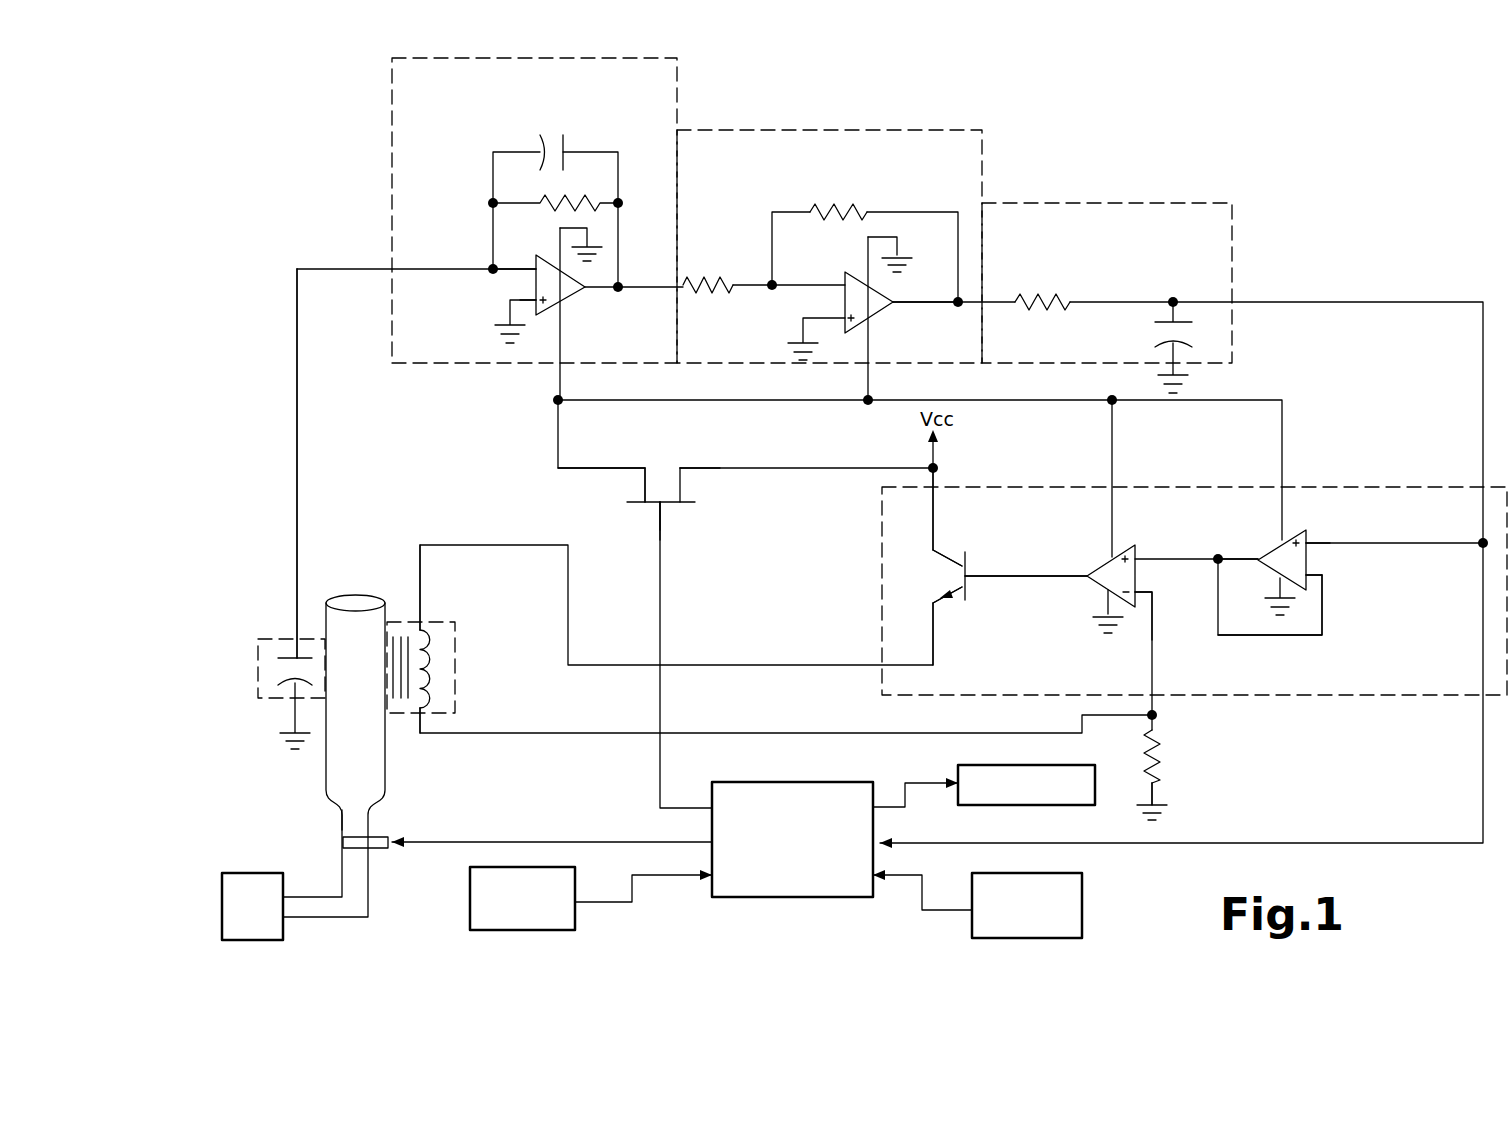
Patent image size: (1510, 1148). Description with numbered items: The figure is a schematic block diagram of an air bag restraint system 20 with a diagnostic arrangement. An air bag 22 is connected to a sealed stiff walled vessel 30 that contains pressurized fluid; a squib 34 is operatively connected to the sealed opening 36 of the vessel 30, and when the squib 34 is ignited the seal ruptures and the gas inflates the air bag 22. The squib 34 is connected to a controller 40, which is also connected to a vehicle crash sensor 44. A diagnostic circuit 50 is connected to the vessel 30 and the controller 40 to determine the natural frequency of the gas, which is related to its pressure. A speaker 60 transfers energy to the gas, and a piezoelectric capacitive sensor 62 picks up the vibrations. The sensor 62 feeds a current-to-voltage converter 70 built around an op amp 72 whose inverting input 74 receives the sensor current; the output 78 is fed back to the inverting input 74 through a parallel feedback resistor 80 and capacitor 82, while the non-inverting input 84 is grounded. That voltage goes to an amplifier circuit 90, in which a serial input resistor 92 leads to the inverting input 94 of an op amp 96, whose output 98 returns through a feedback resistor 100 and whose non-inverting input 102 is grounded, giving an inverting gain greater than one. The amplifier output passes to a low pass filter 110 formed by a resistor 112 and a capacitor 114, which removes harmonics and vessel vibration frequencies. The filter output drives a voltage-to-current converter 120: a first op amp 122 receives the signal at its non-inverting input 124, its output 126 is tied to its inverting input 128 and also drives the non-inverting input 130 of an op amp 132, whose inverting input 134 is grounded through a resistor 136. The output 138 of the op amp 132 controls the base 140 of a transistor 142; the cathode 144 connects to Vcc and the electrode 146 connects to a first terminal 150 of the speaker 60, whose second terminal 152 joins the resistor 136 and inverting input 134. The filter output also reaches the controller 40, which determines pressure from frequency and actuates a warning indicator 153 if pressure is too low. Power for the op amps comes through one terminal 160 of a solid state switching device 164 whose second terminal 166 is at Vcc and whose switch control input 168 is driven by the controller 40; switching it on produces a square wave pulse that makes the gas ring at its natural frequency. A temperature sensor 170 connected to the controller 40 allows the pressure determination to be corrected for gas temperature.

The air bag restraint system 20 is at (252, 240).
The air bag 22 is at (245, 873).
The sealed stiff walled vessel 30 is at (357, 747).
The squib 34 is at (376, 843).
The sealed opening 36 is at (346, 819).
The controller 40 is at (803, 790).
The vehicle crash sensor 44 is at (985, 933).
The diagnostic circuit 50 is at (272, 505).
The speaker 60 is at (440, 659).
The piezoelectric capacitive sensor 62 is at (278, 641).
The current-to-voltage converter 70 is at (392, 155).
The operational amplifier 72 is at (560, 283).
The inverting input 74 is at (540, 270).
The output 78 is at (612, 287).
The feedback resistor 80 is at (525, 200).
The feedback capacitor 82 is at (570, 150).
The non-inverting input 84 is at (536, 300).
The amplifier circuit 90 is at (885, 130).
The serial input resistor 92 is at (728, 290).
The inverting input 94 is at (848, 290).
The op amp 96 is at (880, 305).
The output 98 is at (885, 300).
The feedback resistor 100 is at (815, 210).
The non-inverting input 102 is at (852, 318).
The low pass filter 110 is at (1120, 203).
The resistor 112 is at (1062, 305).
The capacitor 114 is at (1165, 322).
The voltage-to-current converter 120 is at (1075, 487).
The first op amp 122 is at (1262, 558).
The non-inverting input 124 is at (1310, 543).
The output 126 is at (1282, 575).
The inverting input 128 is at (1312, 575).
The non-inverting input 130 is at (1140, 560).
The op amp 132 is at (1105, 592).
The inverting input 134 is at (1150, 600).
The resistor 136 is at (1162, 757).
The output 138 is at (1090, 575).
The base 140 is at (970, 578).
The transistor 142 is at (928, 577).
The cathode 144 is at (950, 556).
The electrode 146 is at (942, 598).
The first terminal 150 is at (420, 617).
The second terminal 152 is at (420, 723).
The warning indicator 153 is at (1017, 805).
The terminal 160 is at (628, 468).
The solid state switching device 164 is at (637, 481).
The second terminal 166 is at (688, 468).
The switch control input 168 is at (665, 505).
The temperature sensor 170 is at (560, 927).